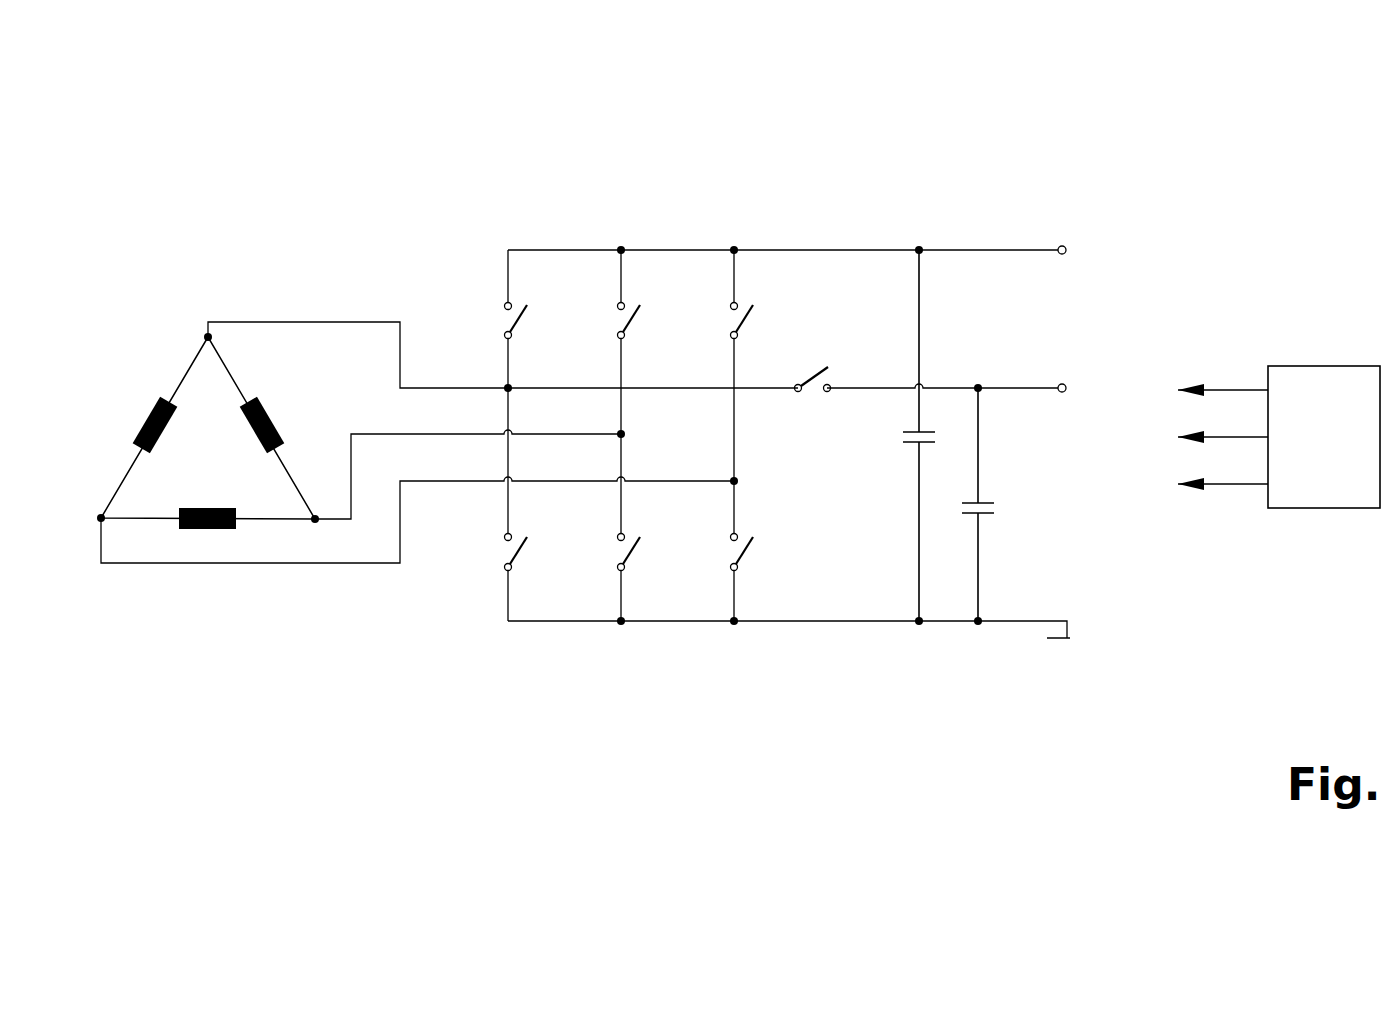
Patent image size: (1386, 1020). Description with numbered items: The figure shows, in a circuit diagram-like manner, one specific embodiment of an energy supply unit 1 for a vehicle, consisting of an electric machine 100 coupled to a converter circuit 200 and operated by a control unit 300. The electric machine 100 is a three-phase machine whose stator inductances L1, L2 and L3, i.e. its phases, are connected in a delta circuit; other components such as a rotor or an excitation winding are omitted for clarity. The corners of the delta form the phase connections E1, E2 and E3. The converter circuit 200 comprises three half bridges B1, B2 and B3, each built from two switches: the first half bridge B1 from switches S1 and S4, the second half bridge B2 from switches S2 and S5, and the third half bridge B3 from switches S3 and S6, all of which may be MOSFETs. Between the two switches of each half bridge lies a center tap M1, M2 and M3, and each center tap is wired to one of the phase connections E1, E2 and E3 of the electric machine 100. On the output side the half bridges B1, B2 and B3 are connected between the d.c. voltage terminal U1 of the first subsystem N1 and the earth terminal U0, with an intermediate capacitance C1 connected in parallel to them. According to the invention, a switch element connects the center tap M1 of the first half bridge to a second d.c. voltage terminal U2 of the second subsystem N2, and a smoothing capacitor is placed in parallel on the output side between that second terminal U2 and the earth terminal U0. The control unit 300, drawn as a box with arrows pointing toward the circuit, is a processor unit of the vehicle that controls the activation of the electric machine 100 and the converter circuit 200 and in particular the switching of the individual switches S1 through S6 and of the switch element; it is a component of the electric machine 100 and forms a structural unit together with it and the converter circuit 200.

The energy supply unit 1 is at (189, 138).
The electric machine 100 is at (214, 663).
The converter circuit 200 is at (739, 665).
The control unit 300 is at (1327, 366).
The stator inductance L1 is at (270, 424).
The stator inductance L2 is at (207, 503).
The stator inductance L3 is at (142, 424).
The phase connection E1 is at (208, 337).
The phase connection E2 is at (315, 519).
The phase connection E3 is at (101, 518).
The half bridge B1 is at (508, 233).
The half bridge B2 is at (621, 233).
The half bridge B3 is at (734, 233).
The switch S1 is at (498, 322).
The switch S2 is at (611, 322).
The switch S3 is at (724, 322).
The switch S4 is at (498, 554).
The switch S5 is at (611, 554).
The switch S6 is at (724, 554).
The center tap M1 is at (508, 388).
The center tap M2 is at (621, 434).
The center tap M3 is at (734, 481).
The intermediate capacitance C1 is at (935, 435).
The d.c. voltage terminal U1 is at (1081, 255).
The second d.c. voltage terminal U2 is at (1081, 393).
The earth terminal U0 is at (1088, 631).
The first subsystem N1 is at (1100, 252).
The second subsystem N2 is at (1100, 390).